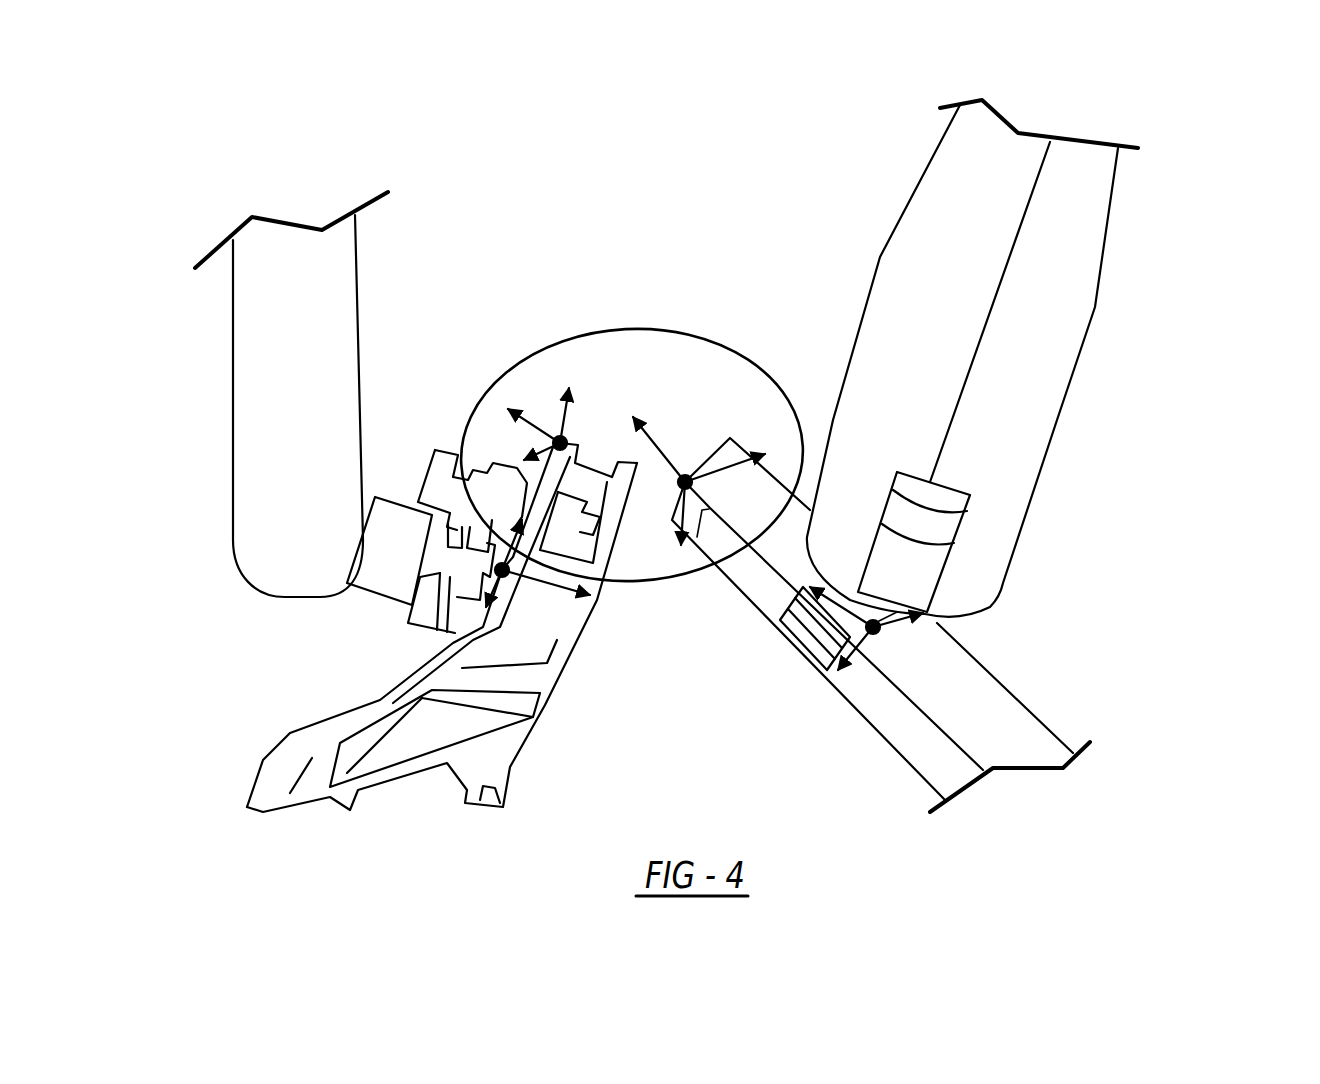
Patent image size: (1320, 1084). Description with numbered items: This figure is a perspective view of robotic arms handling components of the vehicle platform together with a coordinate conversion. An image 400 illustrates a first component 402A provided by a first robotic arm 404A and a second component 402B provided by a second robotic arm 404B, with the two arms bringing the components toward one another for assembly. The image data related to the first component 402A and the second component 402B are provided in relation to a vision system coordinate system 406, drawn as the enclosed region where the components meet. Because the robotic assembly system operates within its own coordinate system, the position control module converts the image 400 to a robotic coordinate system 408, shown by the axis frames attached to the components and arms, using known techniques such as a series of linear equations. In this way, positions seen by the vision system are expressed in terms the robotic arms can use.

The image 400 is at (1182, 298).
The first component 402A is at (325, 716).
The second component 402B is at (1047, 715).
The first robotic arm 404A is at (233, 397).
The second robotic arm 404B is at (1057, 430).
The vision system coordinate system 406 is at (697, 338).
The robotic coordinate system 408 is at (522, 587).